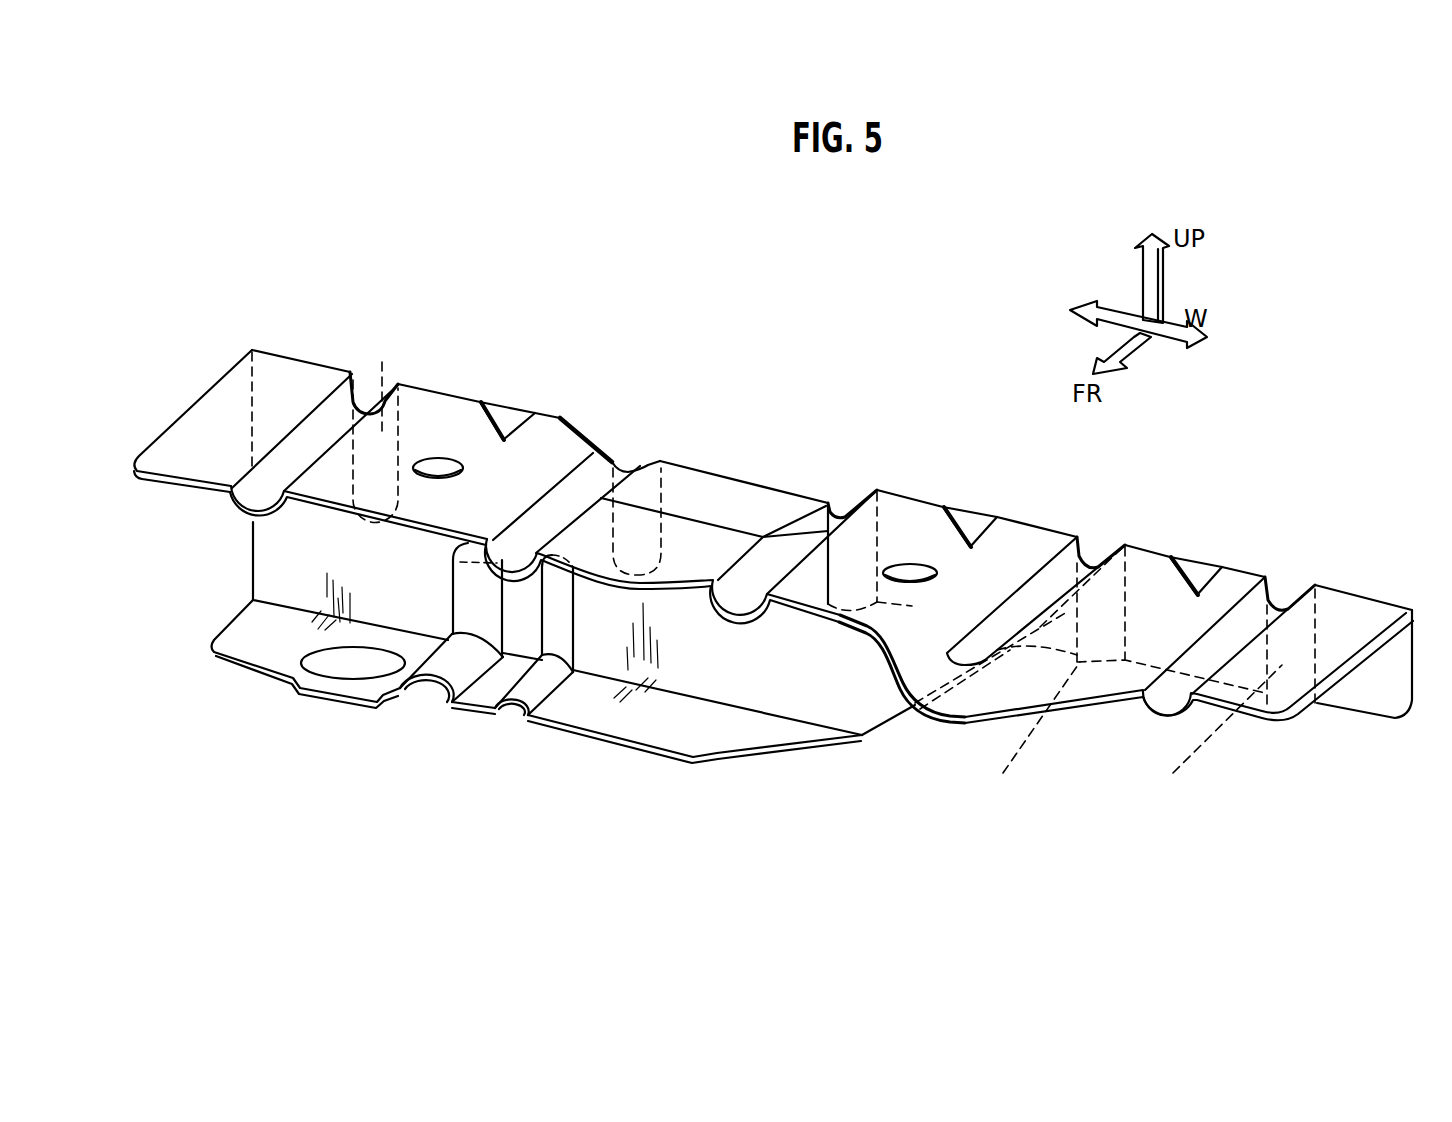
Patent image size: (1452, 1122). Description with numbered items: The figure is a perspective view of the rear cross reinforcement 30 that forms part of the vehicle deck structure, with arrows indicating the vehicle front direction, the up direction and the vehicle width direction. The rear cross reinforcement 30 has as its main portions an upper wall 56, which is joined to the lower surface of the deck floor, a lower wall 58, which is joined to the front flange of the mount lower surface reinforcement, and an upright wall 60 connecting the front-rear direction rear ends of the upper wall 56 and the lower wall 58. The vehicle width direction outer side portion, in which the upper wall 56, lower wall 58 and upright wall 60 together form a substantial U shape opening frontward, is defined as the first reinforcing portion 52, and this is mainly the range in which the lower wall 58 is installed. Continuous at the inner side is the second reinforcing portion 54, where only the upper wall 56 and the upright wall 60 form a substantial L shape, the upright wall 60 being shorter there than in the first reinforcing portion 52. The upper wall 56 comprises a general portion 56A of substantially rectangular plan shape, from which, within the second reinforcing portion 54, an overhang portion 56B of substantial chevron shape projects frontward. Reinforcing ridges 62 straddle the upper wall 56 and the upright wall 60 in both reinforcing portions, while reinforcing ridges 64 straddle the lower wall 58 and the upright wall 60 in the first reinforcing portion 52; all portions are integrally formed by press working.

The rear cross reinforcement 30 is at (822, 355).
The first reinforcing portion 52 is at (572, 415).
The second reinforcing portion 54 is at (1078, 516).
The upper wall 56 is at (812, 426).
The general portion 56A is at (717, 543).
The overhang portion 56B is at (925, 660).
The lower wall 58 is at (622, 725).
The upright wall 60 is at (747, 668).
The reinforcing ridges 62 is at (323, 425).
The reinforcing ridges 64 is at (466, 673).